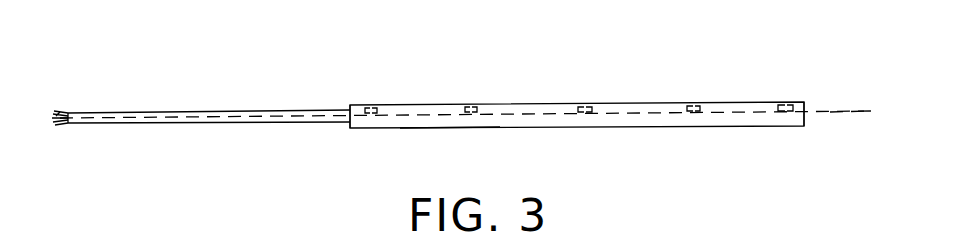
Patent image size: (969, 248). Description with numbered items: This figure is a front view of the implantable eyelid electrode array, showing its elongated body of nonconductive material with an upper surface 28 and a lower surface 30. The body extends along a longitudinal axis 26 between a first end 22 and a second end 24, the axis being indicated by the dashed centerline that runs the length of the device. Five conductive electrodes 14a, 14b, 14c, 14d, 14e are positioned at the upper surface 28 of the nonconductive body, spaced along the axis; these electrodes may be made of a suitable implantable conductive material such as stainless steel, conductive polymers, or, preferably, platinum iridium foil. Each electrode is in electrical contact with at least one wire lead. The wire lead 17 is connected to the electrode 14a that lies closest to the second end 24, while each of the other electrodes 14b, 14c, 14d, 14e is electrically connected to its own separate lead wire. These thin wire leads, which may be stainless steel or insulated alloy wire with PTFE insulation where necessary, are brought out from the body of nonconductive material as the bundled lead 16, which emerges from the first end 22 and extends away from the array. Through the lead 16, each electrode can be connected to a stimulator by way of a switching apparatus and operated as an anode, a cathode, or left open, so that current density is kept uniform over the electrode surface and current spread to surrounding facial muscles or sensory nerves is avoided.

The conductive electrode 14a is at (790, 103).
The conductive electrode 14b is at (695, 104).
The conductive electrode 14c is at (588, 105).
The conductive electrode 14d is at (474, 105).
The conductive electrode 14e is at (370, 106).
The lead wire 16 is at (165, 123).
The wire lead 17 is at (744, 112).
The first end 22 is at (348, 128).
The second end 24 is at (805, 118).
The longitudinal axis 26 is at (845, 112).
The upper surface 28 is at (440, 105).
The lower surface 30 is at (447, 128).